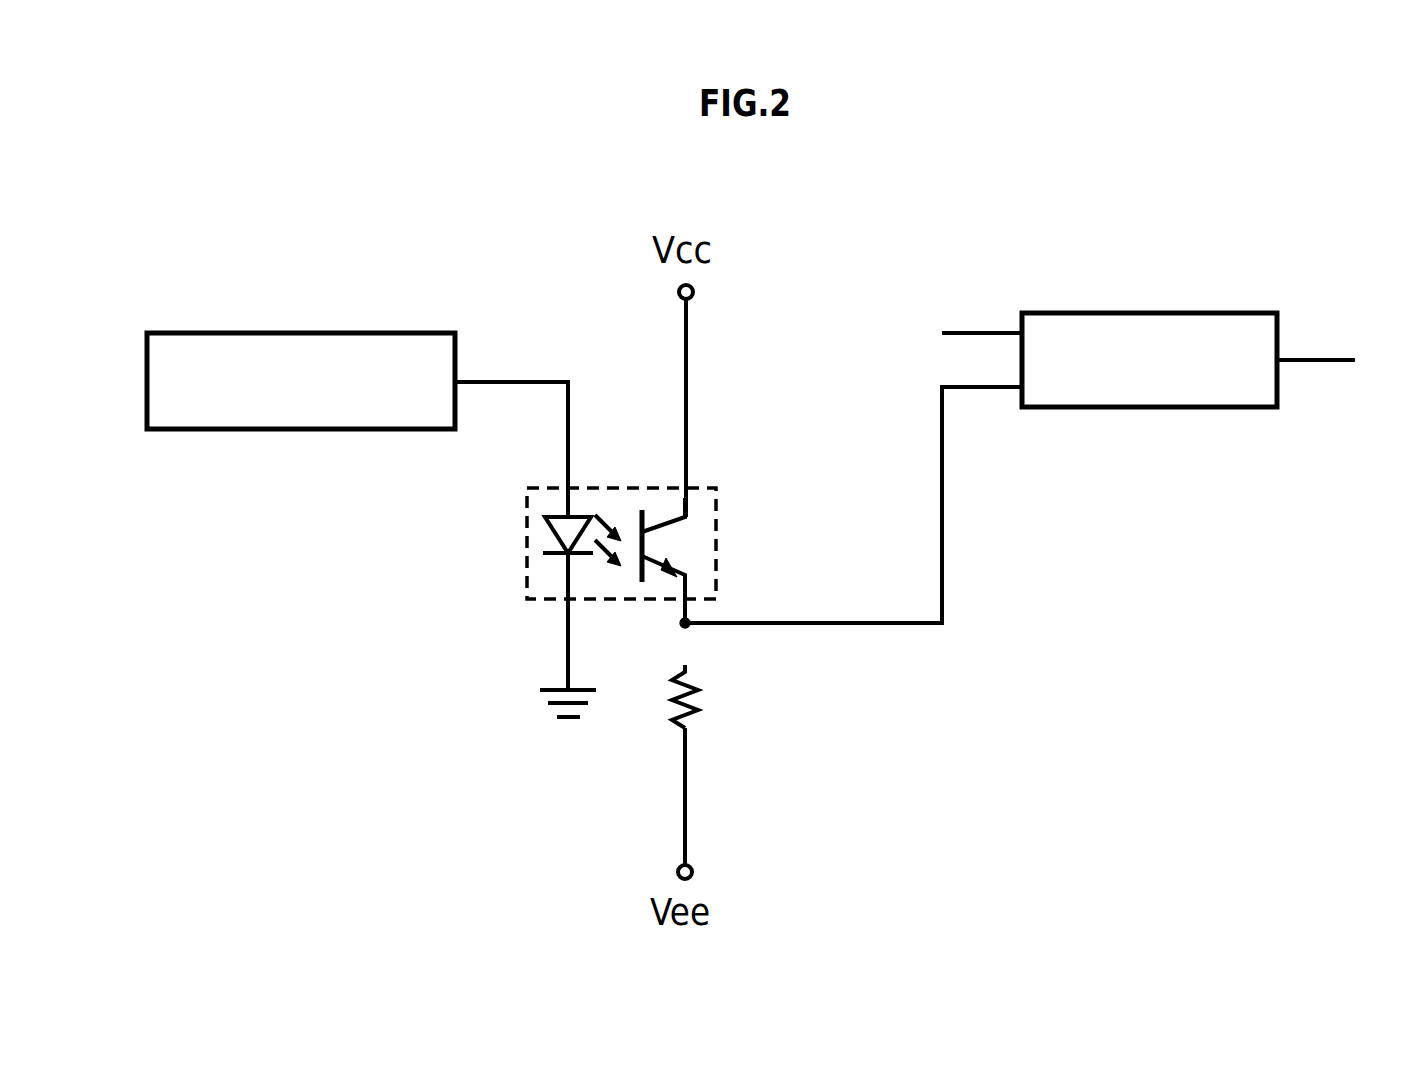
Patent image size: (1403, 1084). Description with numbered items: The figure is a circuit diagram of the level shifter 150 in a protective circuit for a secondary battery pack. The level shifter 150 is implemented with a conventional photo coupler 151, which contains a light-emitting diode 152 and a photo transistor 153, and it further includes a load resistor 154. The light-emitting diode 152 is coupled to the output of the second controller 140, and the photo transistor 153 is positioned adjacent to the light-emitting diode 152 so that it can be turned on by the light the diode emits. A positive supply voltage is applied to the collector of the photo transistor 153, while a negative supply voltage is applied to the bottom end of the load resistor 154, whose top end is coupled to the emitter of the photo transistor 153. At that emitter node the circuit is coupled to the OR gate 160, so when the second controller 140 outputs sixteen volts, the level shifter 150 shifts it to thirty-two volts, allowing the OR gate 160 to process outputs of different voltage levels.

The second controller 140 is at (295, 333).
The level shifter 150 is at (745, 440).
The photo coupler 151 is at (615, 488).
The light-emitting diode 152 is at (540, 536).
The photo transistor 153 is at (690, 545).
The load resistor 154 is at (706, 696).
The OR gate 160 is at (1142, 313).